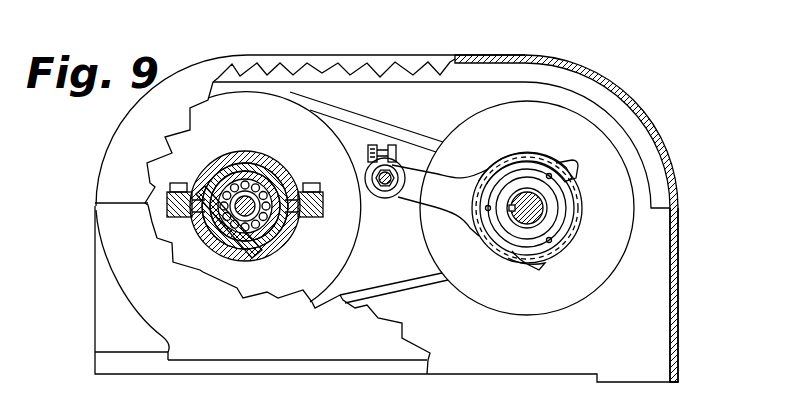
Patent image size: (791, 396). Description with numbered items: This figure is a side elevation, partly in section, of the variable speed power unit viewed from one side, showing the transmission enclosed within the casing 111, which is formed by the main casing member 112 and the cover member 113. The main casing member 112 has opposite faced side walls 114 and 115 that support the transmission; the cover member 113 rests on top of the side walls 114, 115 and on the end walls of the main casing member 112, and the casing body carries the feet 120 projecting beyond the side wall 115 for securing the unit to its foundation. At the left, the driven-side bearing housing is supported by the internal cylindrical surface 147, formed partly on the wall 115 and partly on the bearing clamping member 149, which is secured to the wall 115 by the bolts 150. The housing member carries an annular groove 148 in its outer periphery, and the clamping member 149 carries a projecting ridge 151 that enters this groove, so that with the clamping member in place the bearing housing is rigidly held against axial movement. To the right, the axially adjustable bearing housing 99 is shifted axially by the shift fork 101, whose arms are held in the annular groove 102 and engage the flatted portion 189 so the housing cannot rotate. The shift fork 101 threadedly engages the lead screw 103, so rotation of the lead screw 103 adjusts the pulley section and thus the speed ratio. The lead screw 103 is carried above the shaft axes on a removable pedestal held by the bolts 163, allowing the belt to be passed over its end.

The bearing housing 99 is at (576, 225).
The shift fork 101 is at (445, 178).
The annular groove 102 is at (578, 214).
The lead screw 103 is at (385, 199).
The casing 111 is at (658, 304).
The main casing member 112 is at (681, 250).
The cover member 113 is at (672, 154).
The side wall 114 is at (405, 88).
The side wall 115 is at (276, 331).
The feet 120 is at (100, 355).
The internal cylindrical surface 147 is at (292, 245).
The annular groove 148 is at (236, 246).
The bearing clamping member 149 is at (250, 163).
The bolts 150 is at (185, 183).
The projecting ridge 151 is at (283, 181).
The bolts 163 is at (563, 164).
The flatted portion 189 is at (540, 168).